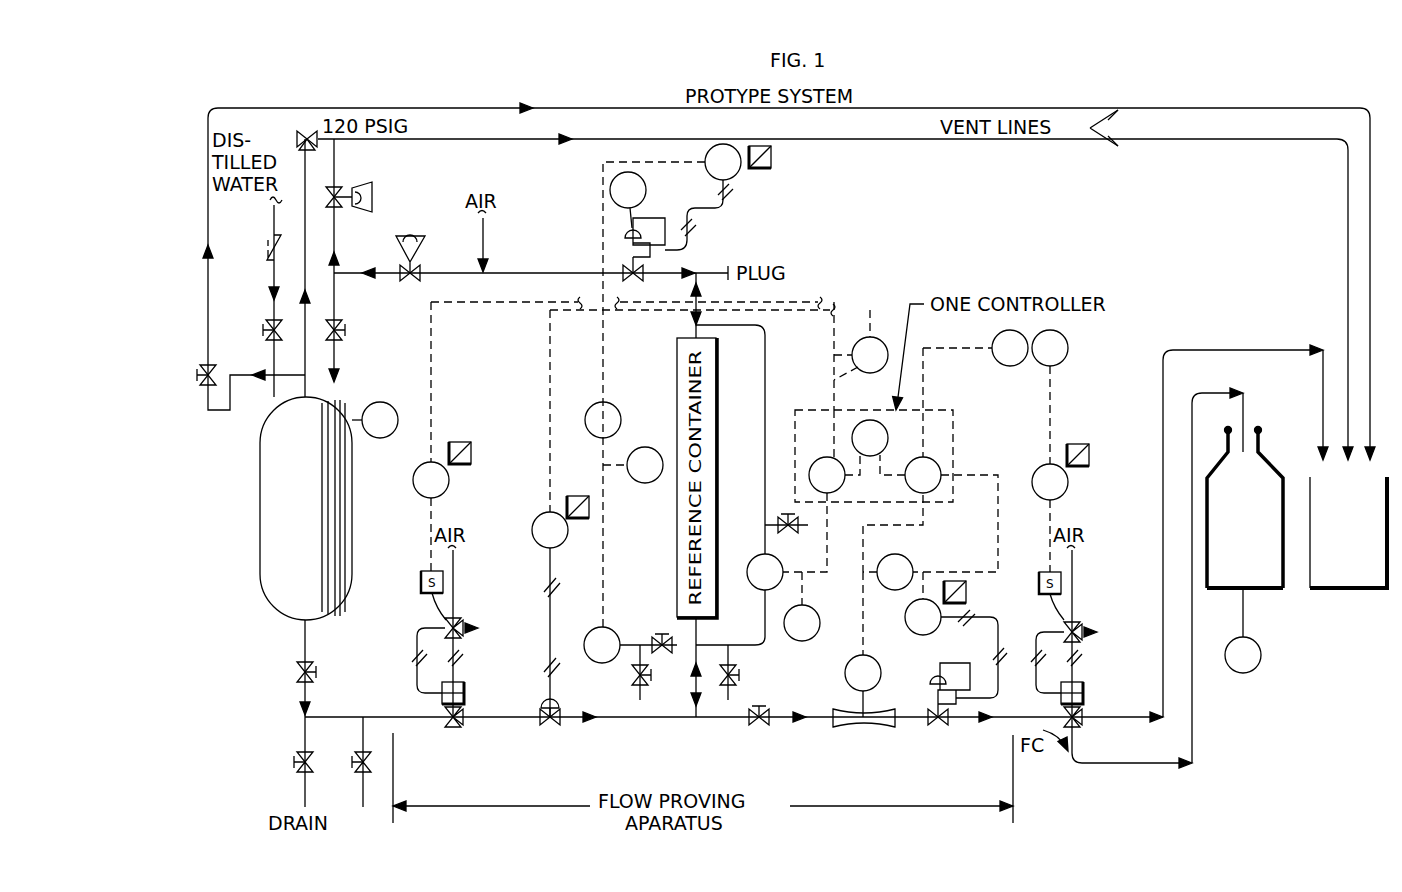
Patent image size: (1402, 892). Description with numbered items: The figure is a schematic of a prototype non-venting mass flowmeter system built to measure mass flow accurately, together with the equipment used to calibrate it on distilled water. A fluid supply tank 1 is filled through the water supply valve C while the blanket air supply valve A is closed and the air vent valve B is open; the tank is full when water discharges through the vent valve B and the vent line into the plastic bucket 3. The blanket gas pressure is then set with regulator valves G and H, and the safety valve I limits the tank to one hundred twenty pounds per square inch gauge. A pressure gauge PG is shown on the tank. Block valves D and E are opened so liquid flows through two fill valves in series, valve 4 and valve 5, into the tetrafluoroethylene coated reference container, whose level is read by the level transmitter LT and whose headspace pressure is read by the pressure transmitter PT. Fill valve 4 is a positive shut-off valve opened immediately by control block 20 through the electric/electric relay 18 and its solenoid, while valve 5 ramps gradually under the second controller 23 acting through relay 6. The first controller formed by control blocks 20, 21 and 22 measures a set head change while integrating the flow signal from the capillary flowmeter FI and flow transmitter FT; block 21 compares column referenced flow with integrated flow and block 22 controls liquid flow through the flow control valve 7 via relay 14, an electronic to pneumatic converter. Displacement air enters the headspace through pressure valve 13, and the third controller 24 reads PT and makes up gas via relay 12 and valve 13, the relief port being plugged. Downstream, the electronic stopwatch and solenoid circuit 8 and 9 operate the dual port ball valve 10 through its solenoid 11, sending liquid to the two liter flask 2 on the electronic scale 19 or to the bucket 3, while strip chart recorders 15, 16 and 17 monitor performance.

The fluid supply tank 1 is at (303, 531).
The two liter flask 2 is at (1252, 535).
The plastic bucket 3 is at (1357, 535).
The fill valve 4 is at (440, 710).
The fill valve 5 is at (545, 725).
The relay 6 is at (560, 522).
The flow control valve 7 is at (935, 690).
The electronic stopwatch 8 is at (1010, 348).
The solenoid control valve circuit 9 is at (1050, 348).
The dual port ball valve 10 is at (1085, 710).
The control solenoid 11 is at (1060, 472).
The relay 12 is at (738, 162).
The pressure valve 13 is at (671, 226).
The relay 14 is at (935, 608).
The strip chart recorder 15 is at (633, 465).
The strip chart recorder 16 is at (802, 623).
The strip chart recorder 17 is at (895, 572).
The electric/electric relay 18 is at (442, 470).
The electronic scale 19 is at (1243, 630).
The control block 20 is at (827, 475).
The control block 21 is at (870, 438).
The control block 22 is at (923, 475).
The second controller 23 is at (870, 355).
The third controller 24 is at (603, 420).
The blanket air supply valve A is at (342, 328).
The air vent valve B is at (218, 366).
The water supply valve C is at (268, 322).
The block valve D is at (297, 664).
The block valve E is at (770, 705).
The regulator valve G is at (417, 262).
The regulator valve H is at (339, 190).
The safety valve I is at (303, 136).
The pressure gauge PG is at (375, 420).
The level transmitter LT is at (765, 572).
The pressure transmitter PT is at (602, 645).
The flow transmitter FT is at (863, 686).
The capillary flowmeter FI is at (878, 727).